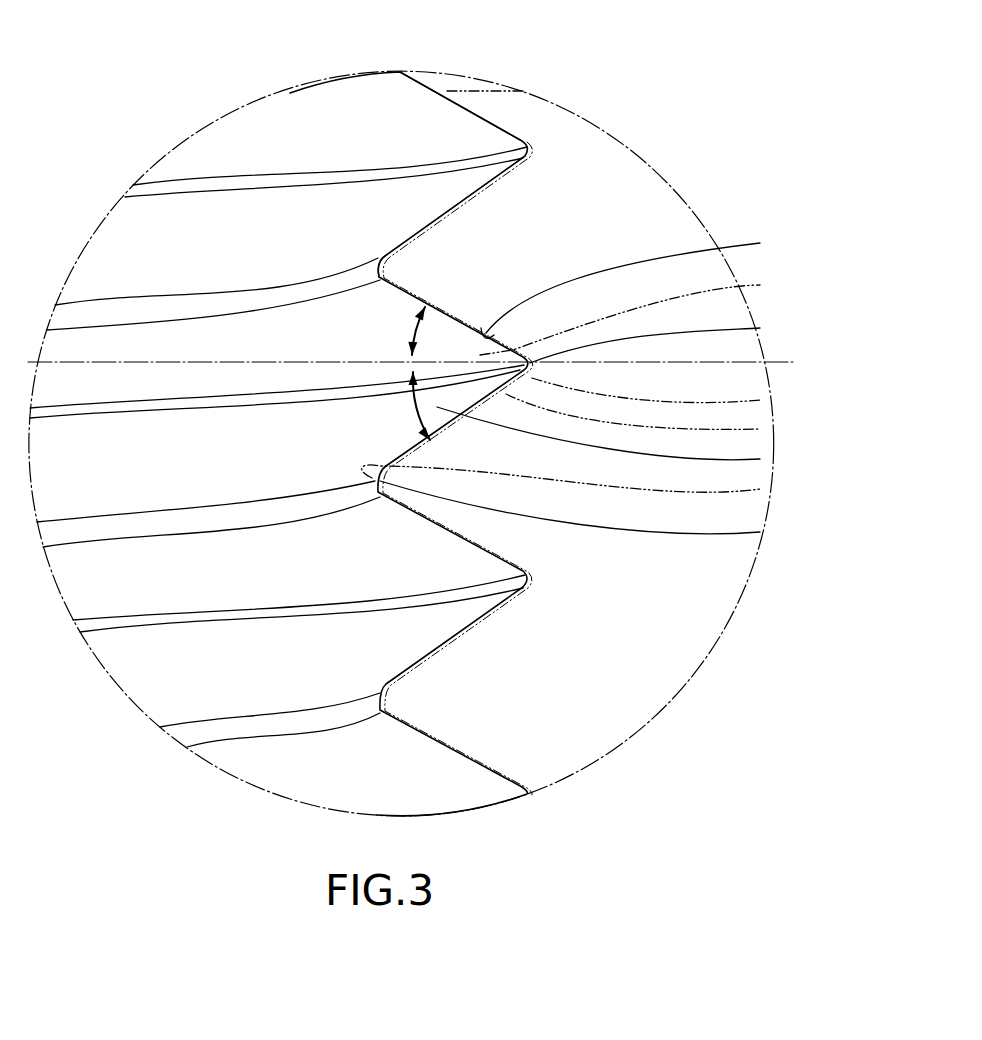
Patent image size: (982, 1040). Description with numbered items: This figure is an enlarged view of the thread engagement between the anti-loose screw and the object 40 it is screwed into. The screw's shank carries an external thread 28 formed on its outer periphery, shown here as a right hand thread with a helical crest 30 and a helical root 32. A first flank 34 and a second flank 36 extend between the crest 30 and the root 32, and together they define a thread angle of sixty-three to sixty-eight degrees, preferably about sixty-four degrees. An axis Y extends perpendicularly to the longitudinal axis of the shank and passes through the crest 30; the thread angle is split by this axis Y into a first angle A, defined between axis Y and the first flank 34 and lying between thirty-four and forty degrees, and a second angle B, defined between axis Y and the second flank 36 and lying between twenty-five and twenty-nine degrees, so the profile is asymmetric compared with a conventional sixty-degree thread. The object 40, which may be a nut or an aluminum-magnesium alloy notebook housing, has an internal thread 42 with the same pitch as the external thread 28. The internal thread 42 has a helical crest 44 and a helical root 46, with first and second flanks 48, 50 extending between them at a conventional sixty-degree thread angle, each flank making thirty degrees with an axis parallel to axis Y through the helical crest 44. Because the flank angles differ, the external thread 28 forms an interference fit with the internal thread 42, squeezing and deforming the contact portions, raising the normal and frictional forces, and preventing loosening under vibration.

The external thread 28 is at (522, 128).
The crest 30 is at (760, 328).
The root 32 is at (760, 532).
The first flank 34 is at (478, 191).
The second flank 36 is at (430, 76).
The object 40 is at (466, 92).
The internal thread 42 is at (375, 243).
The helical crest 44 is at (760, 489).
The helical root 46 is at (760, 400).
The first flank 48 is at (466, 200).
The second flank 50 is at (760, 285).
The axis Y is at (424, 363).
The first angle A is at (406, 406).
The second angle B is at (403, 331).